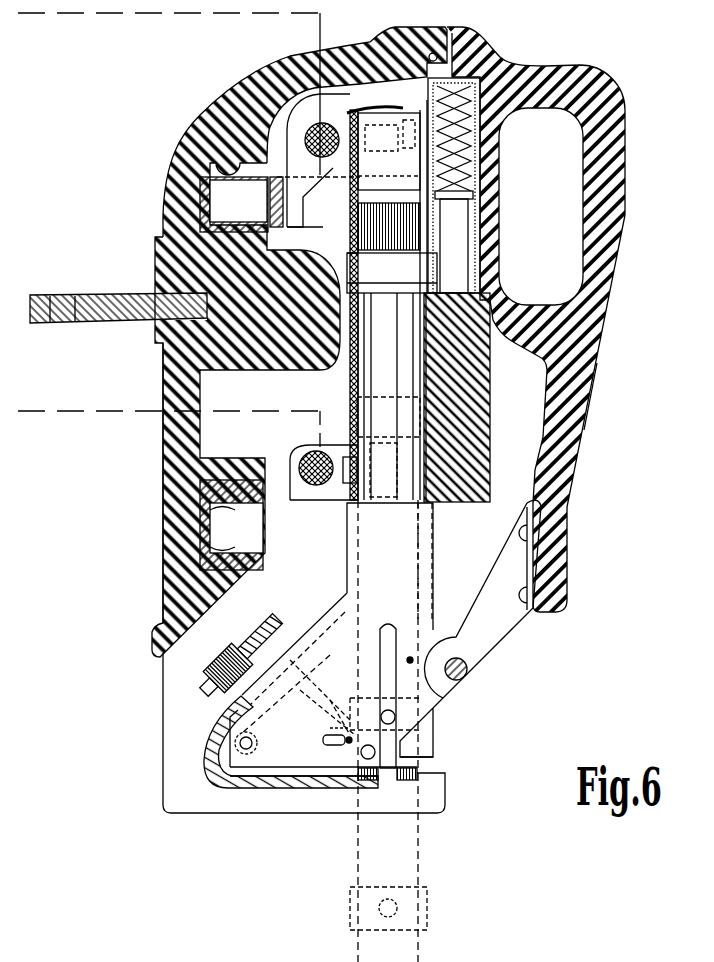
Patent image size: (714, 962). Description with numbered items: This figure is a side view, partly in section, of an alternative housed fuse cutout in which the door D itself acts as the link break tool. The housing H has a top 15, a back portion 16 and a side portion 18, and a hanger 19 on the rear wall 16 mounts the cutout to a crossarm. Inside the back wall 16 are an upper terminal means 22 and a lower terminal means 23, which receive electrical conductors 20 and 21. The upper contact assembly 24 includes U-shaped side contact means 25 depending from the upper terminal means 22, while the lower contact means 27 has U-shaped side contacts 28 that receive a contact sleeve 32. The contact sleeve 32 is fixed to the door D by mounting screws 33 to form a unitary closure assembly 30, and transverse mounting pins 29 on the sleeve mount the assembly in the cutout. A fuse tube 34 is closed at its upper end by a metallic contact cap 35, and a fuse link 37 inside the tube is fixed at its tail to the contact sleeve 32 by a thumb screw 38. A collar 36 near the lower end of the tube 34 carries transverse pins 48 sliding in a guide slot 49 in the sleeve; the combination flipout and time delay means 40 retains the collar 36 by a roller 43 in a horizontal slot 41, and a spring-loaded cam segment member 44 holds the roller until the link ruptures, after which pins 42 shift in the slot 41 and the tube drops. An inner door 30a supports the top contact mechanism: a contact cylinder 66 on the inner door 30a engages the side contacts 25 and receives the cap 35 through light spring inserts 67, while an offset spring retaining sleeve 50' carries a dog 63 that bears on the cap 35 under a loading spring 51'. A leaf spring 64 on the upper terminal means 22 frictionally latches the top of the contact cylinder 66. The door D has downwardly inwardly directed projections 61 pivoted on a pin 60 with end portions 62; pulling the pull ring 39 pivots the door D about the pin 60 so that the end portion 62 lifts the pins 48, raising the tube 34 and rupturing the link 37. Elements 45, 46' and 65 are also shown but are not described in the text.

The top 15 is at (362, 45).
The back portion 16 is at (168, 435).
The side portion 18 is at (178, 702).
The hanger 19 is at (96, 318).
The electrical conductor 20 is at (160, 14).
The electrical conductor 21 is at (40, 412).
The upper terminal means 22 is at (285, 72).
The lower terminal means 23 is at (296, 455).
The upper contact assembly 24 is at (297, 235).
The side contact means 25 is at (332, 224).
The lower contact means 27 is at (292, 560).
The side contacts 28 is at (322, 540).
The transverse mounting pins 29 is at (372, 760).
The closure assembly 30 is at (583, 577).
The inner door 30a is at (482, 414).
The contact sleeve 32 is at (292, 673).
The mounting screws 33 is at (432, 530).
The fuse tube 34 is at (362, 372).
The metallic contact cap 35 is at (372, 216).
The collar 36 is at (412, 716).
The fuse link 37 is at (236, 788).
The thumb screw 38 is at (232, 648).
The pull ring 39 is at (612, 205).
The combination flipout and time delay means 40 is at (290, 782).
The horizontal contact sleeve slot 41 is at (322, 740).
The pins 42 is at (338, 746).
The roller 43 is at (345, 730).
The cam segment member 44 is at (327, 674).
The link 45 is at (355, 695).
The block 46' is at (372, 787).
The transverse pins 48 is at (398, 702).
The guide slot 49 is at (388, 622).
The spring retaining sleeve 50' is at (478, 185).
The loading spring 51' is at (480, 138).
The pin 60 is at (468, 672).
The projections 61 is at (505, 637).
The end portions 62 is at (442, 740).
The dog 63 is at (455, 200).
The leaf spring 64 is at (386, 111).
The flange 65 is at (356, 306).
The contact cylinder 66 is at (350, 182).
The light spring inserts 67 is at (354, 270).
The door D is at (613, 405).
The housing H is at (150, 524).